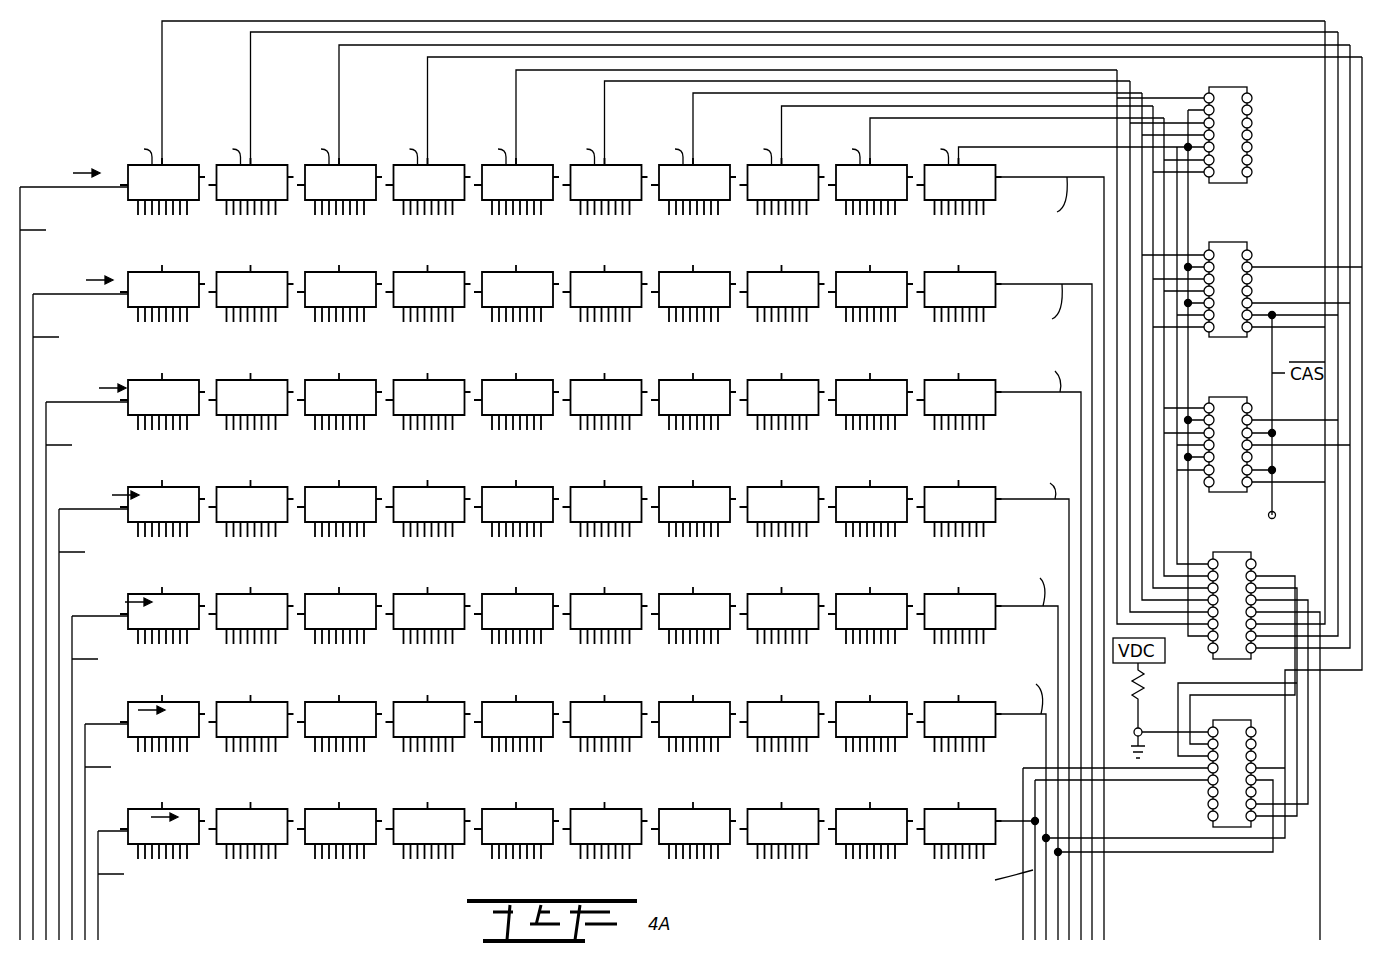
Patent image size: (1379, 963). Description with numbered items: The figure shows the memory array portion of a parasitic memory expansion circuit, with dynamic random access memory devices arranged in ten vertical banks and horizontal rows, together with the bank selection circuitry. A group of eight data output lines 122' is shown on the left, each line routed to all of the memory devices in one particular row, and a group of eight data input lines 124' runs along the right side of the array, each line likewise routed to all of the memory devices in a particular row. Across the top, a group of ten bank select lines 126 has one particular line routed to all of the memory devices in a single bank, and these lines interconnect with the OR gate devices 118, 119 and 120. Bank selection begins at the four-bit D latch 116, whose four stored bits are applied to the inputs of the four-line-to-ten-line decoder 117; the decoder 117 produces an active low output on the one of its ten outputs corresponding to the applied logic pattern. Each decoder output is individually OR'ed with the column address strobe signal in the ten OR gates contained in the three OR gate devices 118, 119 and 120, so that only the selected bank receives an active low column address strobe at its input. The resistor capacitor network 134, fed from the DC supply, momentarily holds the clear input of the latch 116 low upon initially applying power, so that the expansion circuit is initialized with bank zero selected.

The 4-bit D latch 116 is at (1232, 827).
The 4-line-to-10-line decoder 117 is at (1240, 552).
The OR gate device 118 is at (1229, 397).
The OR gate device 119 is at (1232, 242).
The OR gate device 120 is at (1232, 87).
The bank select lines 126 is at (1034, 158).
The data output lines 122' is at (100, 552).
The data input lines 124' is at (1080, 558).
The resistor capacitor network 134 is at (1129, 706).